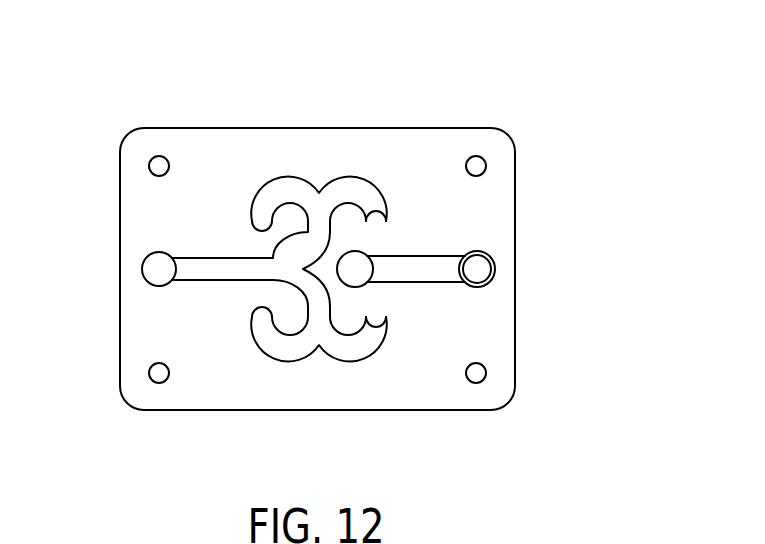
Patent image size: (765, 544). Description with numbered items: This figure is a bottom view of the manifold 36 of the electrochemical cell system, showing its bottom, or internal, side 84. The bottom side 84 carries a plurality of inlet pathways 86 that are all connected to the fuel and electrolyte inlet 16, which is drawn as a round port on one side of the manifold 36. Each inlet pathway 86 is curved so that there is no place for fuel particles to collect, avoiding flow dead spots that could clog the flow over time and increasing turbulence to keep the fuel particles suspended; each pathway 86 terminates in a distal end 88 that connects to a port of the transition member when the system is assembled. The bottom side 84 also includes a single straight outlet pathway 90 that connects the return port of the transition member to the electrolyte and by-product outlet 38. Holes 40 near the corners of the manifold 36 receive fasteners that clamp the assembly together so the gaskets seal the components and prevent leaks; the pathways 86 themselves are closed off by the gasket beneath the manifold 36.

The manifold 36 is at (297, 210).
The bottom side 84 is at (243, 397).
The fuel and electrolyte inlet 16 is at (150, 267).
The electrolyte and by-product outlet 38 is at (472, 267).
The holes 40 is at (476, 166).
The inlet pathways 86 is at (285, 187).
The distal end 88 is at (260, 219).
The outlet pathway 90 is at (437, 272).